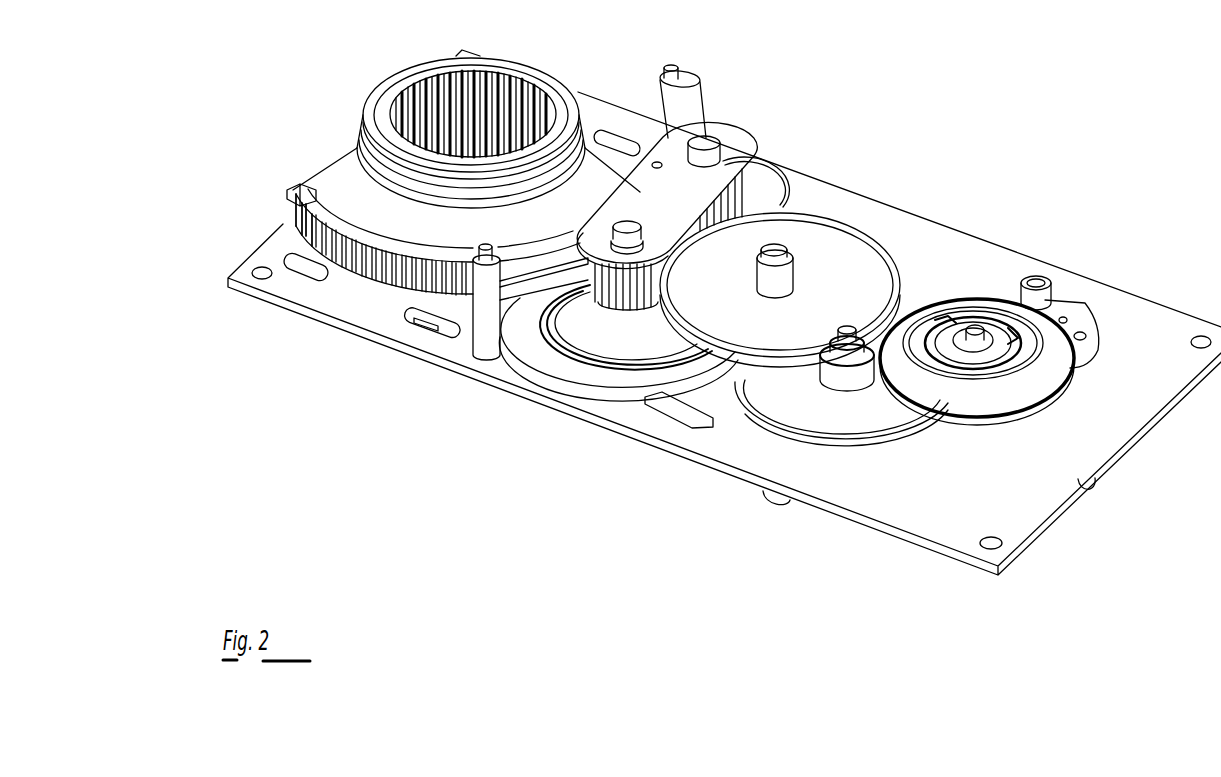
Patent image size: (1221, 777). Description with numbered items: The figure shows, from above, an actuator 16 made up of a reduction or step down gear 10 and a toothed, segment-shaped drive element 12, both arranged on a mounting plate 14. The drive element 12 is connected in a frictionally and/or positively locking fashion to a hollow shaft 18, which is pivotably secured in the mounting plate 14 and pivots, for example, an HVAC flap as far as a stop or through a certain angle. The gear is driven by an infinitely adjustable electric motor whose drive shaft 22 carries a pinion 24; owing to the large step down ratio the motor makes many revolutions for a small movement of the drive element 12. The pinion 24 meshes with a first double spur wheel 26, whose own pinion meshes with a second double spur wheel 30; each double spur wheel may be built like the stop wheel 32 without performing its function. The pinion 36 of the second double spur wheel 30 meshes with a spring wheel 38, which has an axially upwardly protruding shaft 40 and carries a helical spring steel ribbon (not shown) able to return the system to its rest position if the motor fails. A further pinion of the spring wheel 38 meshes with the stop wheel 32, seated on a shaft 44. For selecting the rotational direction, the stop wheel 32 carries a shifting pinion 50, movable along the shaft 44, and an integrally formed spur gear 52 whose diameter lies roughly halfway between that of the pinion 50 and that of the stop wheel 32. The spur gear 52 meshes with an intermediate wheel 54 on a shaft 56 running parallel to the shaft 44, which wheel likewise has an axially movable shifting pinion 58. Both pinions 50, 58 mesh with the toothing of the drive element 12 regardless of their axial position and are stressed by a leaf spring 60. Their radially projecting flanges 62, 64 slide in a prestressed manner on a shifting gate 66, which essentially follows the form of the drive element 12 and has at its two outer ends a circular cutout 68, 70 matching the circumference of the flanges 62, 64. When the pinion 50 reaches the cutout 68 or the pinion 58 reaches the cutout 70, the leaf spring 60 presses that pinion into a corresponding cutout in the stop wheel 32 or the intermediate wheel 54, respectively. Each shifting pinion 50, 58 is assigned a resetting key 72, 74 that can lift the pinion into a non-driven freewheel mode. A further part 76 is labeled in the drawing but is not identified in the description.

The reduction or step down gear 10 is at (651, 420).
The toothed drive element 12 is at (277, 210).
The mounting plate 14 is at (957, 530).
The actuator 16 is at (373, 459).
The hollow shaft 18 is at (497, 80).
The drive shaft 22 is at (1047, 283).
The pinion 24 is at (1050, 310).
The first double spur wheel 26 is at (1053, 350).
The second double spur wheel 30 is at (873, 417).
The stop wheel 32 is at (668, 342).
The pinion 36 is at (840, 387).
The spring wheel 38 is at (856, 265).
The shaft 40 is at (860, 263).
The shaft 44 is at (600, 283).
The shifting pinion 50 is at (630, 367).
The spur gear 52 is at (570, 307).
The intermediate wheel 54 is at (780, 253).
The shaft 56 is at (670, 153).
The shifting pinion 58 is at (770, 200).
The leaf spring 60 is at (648, 207).
The flange 62 is at (588, 226).
The flange 64 is at (713, 130).
The shifting gate 66 is at (387, 227).
The circular cutout 68 is at (287, 193).
The circular cutout 70 is at (655, 163).
The resetting key 72 is at (687, 80).
The resetting key 74 is at (490, 320).
The teeth 76 is at (280, 227).